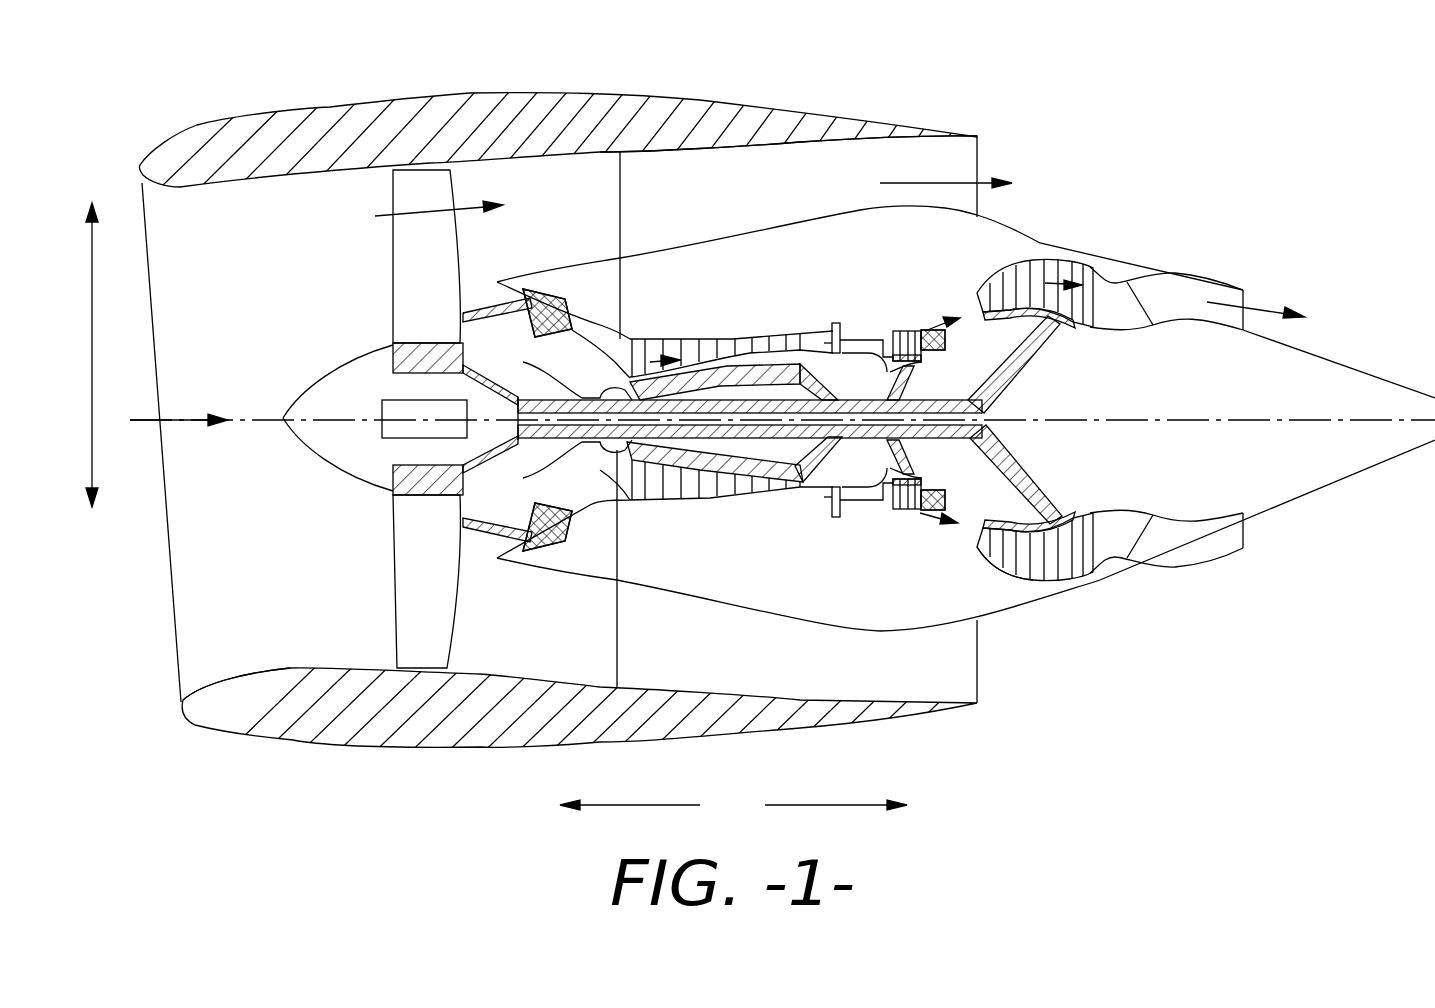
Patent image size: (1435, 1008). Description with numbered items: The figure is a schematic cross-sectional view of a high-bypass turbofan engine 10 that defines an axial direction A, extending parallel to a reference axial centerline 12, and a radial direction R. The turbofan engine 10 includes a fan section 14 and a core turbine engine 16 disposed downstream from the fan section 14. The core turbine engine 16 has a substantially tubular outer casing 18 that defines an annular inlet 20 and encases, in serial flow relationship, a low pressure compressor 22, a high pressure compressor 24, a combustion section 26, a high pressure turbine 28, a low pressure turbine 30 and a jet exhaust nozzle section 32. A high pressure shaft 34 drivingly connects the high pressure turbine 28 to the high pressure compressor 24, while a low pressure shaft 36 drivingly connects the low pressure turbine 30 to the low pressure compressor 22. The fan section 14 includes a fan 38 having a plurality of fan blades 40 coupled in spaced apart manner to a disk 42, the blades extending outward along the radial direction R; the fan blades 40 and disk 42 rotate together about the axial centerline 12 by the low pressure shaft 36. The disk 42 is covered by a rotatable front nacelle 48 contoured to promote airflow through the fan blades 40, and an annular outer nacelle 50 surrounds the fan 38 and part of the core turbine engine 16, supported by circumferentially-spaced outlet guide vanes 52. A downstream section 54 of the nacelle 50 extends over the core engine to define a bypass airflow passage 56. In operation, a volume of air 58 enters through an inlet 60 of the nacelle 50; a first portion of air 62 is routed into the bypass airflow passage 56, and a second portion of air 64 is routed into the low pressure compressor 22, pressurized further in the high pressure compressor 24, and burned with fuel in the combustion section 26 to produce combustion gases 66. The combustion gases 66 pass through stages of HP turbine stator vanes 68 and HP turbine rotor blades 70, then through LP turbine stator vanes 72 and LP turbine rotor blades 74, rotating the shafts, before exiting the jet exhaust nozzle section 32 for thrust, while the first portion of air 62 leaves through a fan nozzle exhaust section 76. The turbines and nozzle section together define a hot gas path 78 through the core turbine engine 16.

The turbofan engine 10 is at (1230, 167).
The axial centerline 12 is at (1160, 415).
The fan section 14 is at (470, 70).
The core turbine engine 16 is at (797, 275).
The outer casing 18 is at (822, 620).
The annular inlet 20 is at (500, 545).
The low pressure compressor 22 is at (583, 515).
The high pressure compressor 24 is at (656, 508).
The combustion section 26 is at (846, 502).
The high pressure turbine 28 is at (935, 503).
The low pressure turbine 30 is at (1082, 580).
The jet exhaust nozzle section 32 is at (1248, 290).
The high pressure shaft 34 is at (900, 366).
The low pressure shaft 36 is at (572, 392).
The fan 38 is at (372, 262).
The fan blades 40 is at (393, 612).
The disk 42 is at (393, 355).
The front nacelle 48 is at (312, 400).
The outer nacelle 50 is at (462, 750).
The outlet guide vanes 52 is at (618, 178).
The downstream section of the nacelle 54 is at (788, 98).
The bypass airflow passage 56 is at (768, 199).
The volume of air 58 is at (168, 412).
The inlet 60 is at (178, 655).
The first portion of air 62 is at (395, 210).
The second portion of air 64 is at (490, 300).
The combustion gases 66 is at (908, 337).
The HP turbine stator vanes 68 is at (880, 513).
The HP turbine rotor blades 70 is at (910, 515).
The LP turbine stator vanes 72 is at (978, 545).
The LP turbine rotor blades 74 is at (1000, 560).
The fan nozzle exhaust section 76 is at (978, 165).
The hot gas path 78 is at (965, 290).
The radial direction R is at (90, 355).
The axial direction A is at (733, 806).